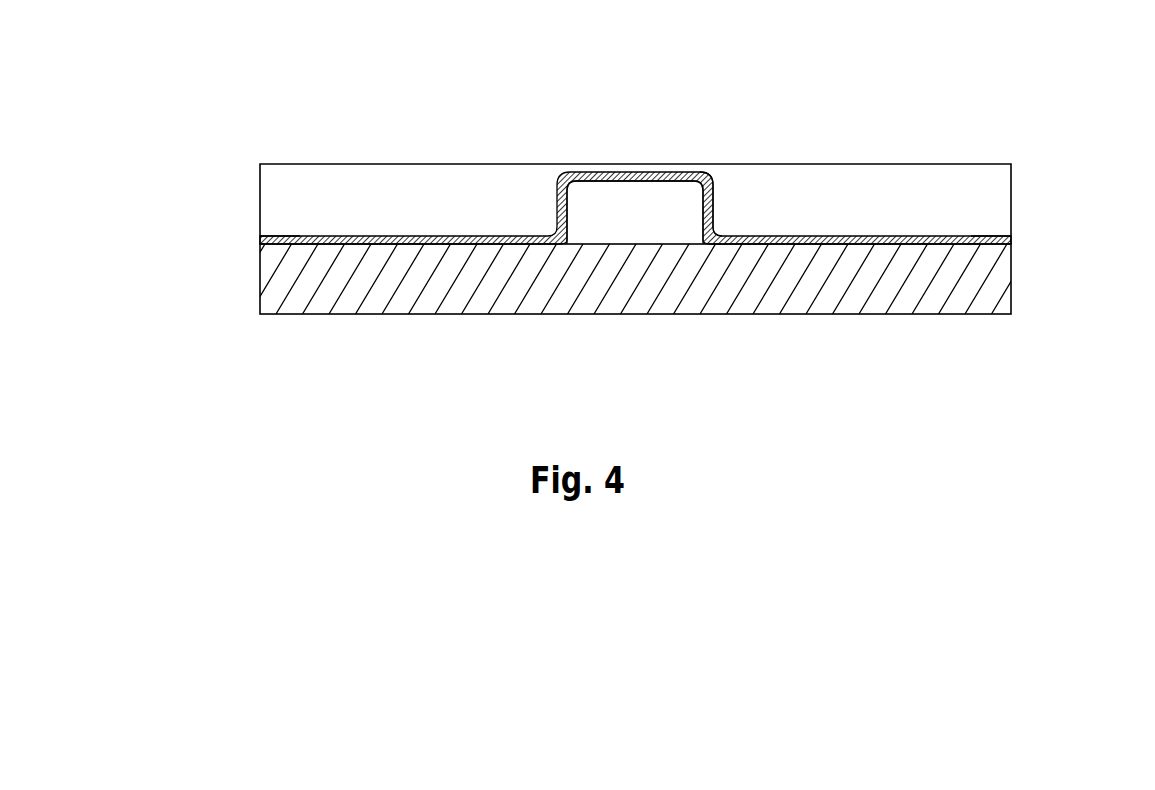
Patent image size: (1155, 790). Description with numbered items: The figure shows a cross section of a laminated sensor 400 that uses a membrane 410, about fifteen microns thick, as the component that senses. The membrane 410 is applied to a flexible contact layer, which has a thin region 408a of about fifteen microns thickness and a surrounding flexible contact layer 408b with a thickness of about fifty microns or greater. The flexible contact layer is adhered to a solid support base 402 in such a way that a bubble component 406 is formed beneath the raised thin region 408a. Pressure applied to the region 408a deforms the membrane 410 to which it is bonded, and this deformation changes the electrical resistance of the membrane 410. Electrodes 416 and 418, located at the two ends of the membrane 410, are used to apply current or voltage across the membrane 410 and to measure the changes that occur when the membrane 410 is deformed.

The laminated sensor 400 is at (635, 292).
The solid support base 402 is at (780, 303).
The bubble component 406 is at (608, 233).
The region of flexible contact layer 408a is at (619, 139).
The surrounding flexible contact layer 408b is at (482, 160).
The membrane 410 is at (707, 155).
The electrode 416 is at (254, 224).
The electrode 418 is at (1005, 227).